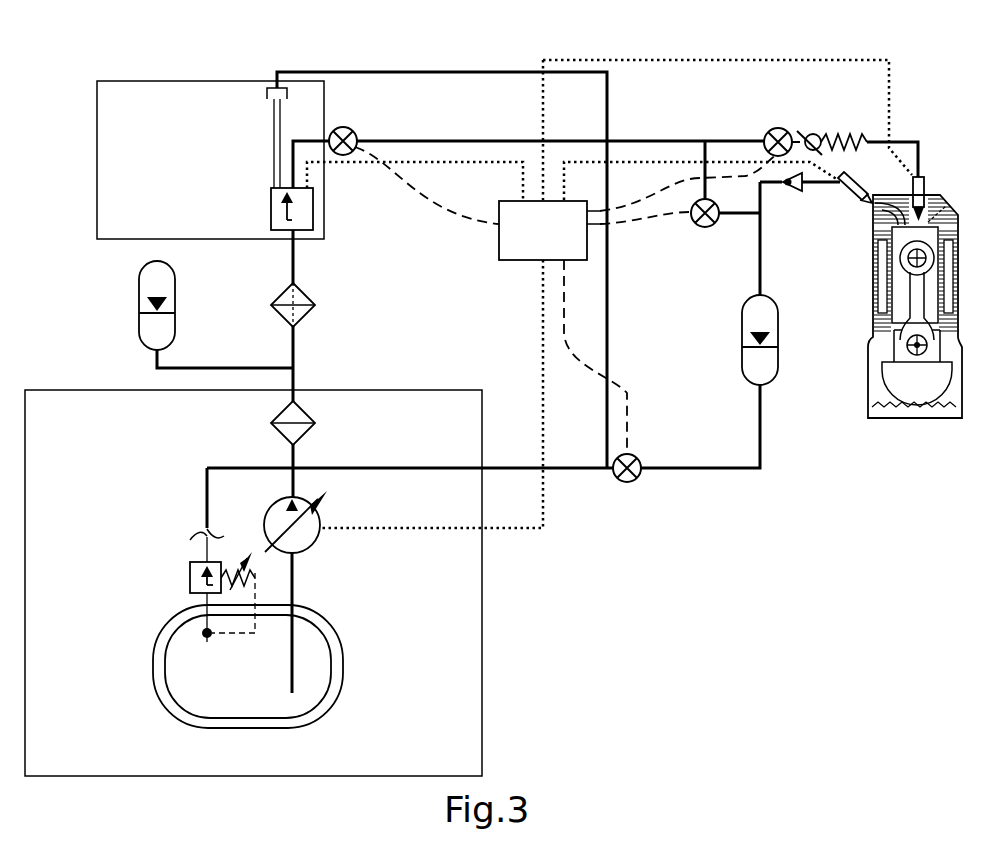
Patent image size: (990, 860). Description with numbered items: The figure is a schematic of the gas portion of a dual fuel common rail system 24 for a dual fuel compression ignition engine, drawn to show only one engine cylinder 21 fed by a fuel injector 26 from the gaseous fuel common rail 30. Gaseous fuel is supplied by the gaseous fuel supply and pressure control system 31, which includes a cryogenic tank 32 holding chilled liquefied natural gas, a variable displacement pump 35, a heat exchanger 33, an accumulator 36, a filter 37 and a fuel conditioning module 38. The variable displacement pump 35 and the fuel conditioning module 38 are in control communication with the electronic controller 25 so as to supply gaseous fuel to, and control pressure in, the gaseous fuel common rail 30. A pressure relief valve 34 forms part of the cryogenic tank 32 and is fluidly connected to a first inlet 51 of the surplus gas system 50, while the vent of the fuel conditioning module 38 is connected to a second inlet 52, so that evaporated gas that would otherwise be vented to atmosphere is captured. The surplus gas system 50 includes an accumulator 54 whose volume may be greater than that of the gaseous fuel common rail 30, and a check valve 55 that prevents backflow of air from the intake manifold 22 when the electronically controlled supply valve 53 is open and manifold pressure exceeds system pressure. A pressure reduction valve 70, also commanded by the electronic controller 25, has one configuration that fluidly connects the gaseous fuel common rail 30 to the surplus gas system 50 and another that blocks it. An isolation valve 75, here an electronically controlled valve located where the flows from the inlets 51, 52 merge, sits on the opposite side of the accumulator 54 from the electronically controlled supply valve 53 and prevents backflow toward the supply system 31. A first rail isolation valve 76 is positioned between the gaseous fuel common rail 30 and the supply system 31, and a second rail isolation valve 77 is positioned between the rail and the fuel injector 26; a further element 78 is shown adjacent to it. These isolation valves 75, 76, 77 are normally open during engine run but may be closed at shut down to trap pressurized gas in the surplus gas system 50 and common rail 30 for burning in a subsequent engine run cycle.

The engine cylinder 21 is at (937, 270).
The intake manifold 22 is at (876, 218).
The dual fuel common rail system 24 is at (485, 52).
The electronic controller 25 is at (508, 262).
The fuel injector 26 is at (926, 181).
The gaseous fuel common rail 30 is at (563, 138).
The gaseous fuel supply and pressure control system 31 is at (178, 428).
The cryogenic tank 32 is at (344, 625).
The heat exchanger 33 is at (316, 411).
The pressure relief valve 34 is at (190, 580).
The variable displacement pump 35 is at (318, 540).
The accumulator 36 is at (176, 291).
The filter 37 is at (316, 293).
The fuel conditioning module 38 is at (313, 205).
The surplus gas system 50 is at (790, 456).
The first inlet 51 is at (205, 530).
The second inlet 52 is at (277, 74).
The electronically controlled supply valve 53 is at (840, 195).
The accumulator 54 is at (779, 340).
The check valve 55 is at (788, 188).
The pressure reduction valve 70 is at (703, 228).
The isolation valve 75 is at (625, 483).
The first rail isolation valve 76 is at (341, 128).
The second rail isolation valve 77 is at (776, 128).
The check valve 78 is at (810, 130).